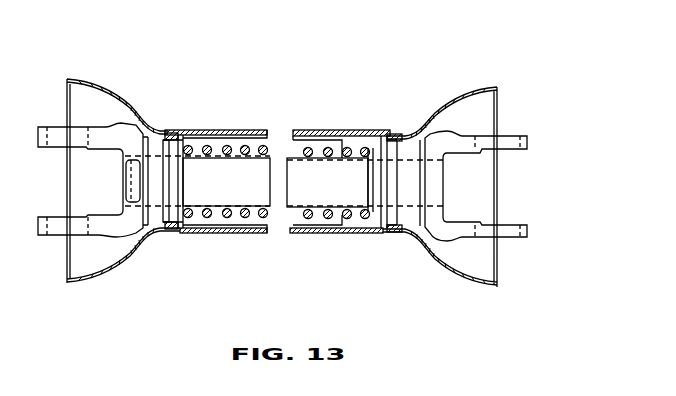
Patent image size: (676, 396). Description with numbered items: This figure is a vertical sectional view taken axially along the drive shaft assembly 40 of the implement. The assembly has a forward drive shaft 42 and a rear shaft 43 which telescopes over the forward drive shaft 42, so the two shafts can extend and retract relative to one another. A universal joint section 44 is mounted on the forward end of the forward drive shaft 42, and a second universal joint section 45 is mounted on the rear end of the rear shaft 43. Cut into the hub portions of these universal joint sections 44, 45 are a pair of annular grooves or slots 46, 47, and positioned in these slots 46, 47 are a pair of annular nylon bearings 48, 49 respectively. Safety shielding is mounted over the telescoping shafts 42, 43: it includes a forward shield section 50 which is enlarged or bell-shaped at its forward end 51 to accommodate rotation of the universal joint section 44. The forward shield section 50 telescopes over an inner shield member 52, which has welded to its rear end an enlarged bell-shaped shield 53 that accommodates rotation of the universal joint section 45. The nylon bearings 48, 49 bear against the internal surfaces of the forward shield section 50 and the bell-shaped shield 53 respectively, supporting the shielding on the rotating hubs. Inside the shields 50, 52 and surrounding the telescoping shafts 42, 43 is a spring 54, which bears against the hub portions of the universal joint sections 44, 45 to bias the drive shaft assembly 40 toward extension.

The drive shaft assembly 40 is at (190, 124).
The forward drive shaft 42 is at (377, 170).
The rear shaft 43 is at (217, 173).
The universal joint section 44 is at (462, 147).
The universal joint section 45 is at (100, 135).
The annular groove or slot 46 is at (395, 150).
The annular groove or slot 47 is at (163, 146).
The annular nylon bearing 48 is at (393, 232).
The annular nylon bearing 49 is at (175, 229).
The forward shield section 50 is at (312, 140).
The forward end 51 is at (455, 98).
The inner shield member 52 is at (242, 132).
The bell-shaped shield 53 is at (106, 88).
The spring 54 is at (306, 152).